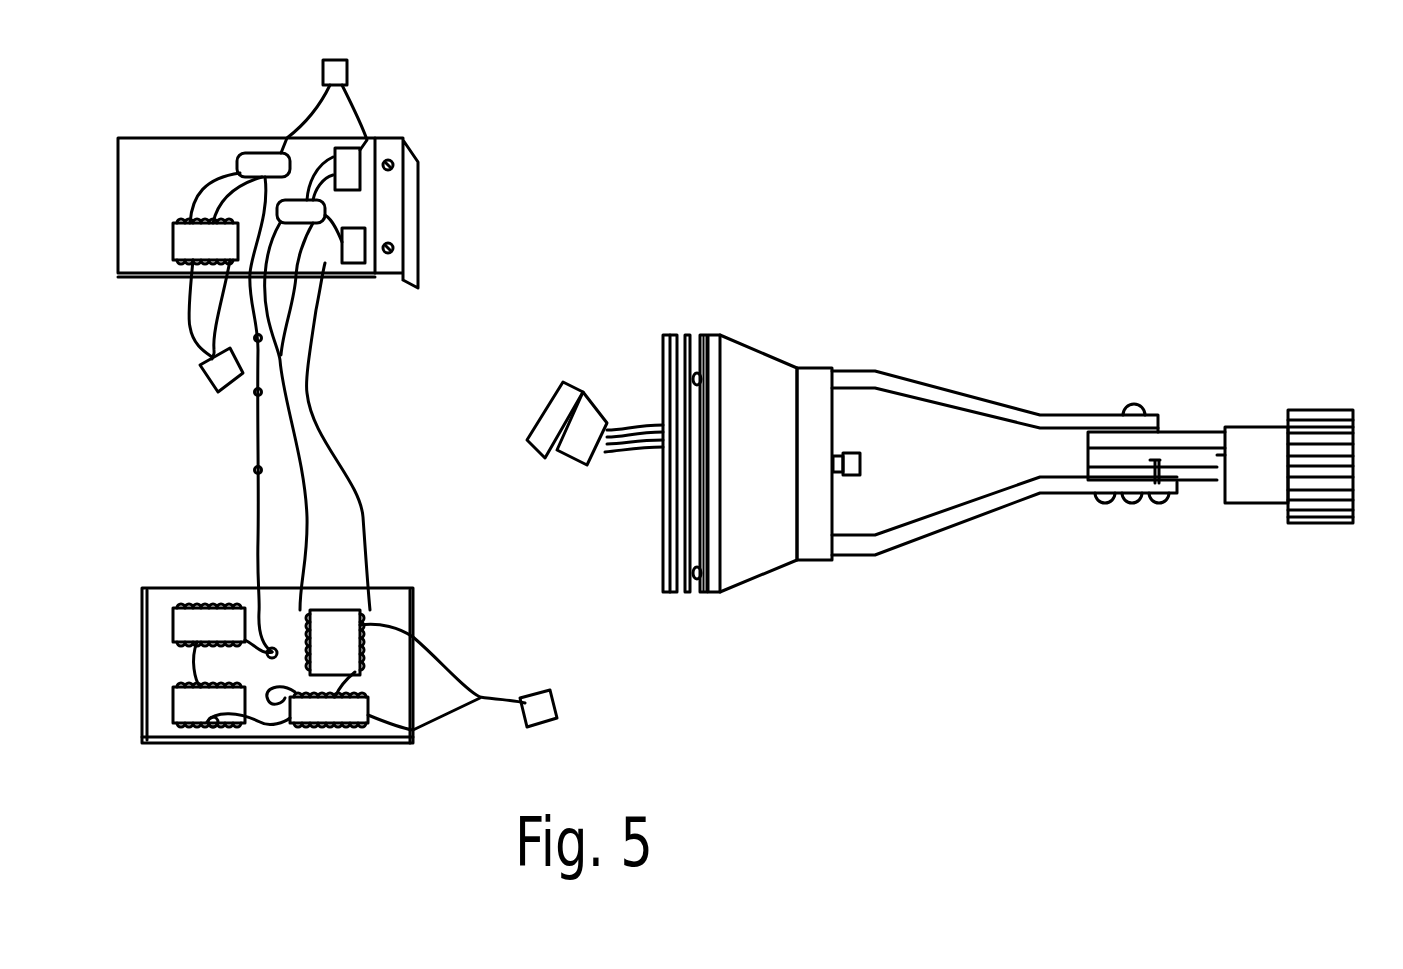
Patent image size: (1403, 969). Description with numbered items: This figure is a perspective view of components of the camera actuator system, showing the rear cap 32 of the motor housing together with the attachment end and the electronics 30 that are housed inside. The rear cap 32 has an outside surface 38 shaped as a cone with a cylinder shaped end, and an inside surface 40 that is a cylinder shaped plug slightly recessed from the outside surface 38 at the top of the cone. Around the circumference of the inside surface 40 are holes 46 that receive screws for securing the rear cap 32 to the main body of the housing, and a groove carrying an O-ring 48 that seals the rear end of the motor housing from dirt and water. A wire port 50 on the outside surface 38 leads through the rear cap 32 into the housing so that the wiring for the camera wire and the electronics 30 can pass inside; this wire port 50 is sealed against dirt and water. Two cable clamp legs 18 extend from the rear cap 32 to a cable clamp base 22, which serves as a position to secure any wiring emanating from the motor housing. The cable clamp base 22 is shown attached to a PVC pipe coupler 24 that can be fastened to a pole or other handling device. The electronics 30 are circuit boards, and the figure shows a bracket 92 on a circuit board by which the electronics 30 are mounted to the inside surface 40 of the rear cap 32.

The electronics 30 is at (175, 138).
The bracket 92 is at (413, 162).
The rear cap 32 is at (778, 310).
The inside surface 40 is at (664, 567).
The O-ring 48 is at (686, 332).
The holes 46 is at (705, 330).
The outside surface 38 is at (781, 555).
The cable clamp legs 18 is at (957, 398).
The cable clamp base 22 is at (1183, 437).
The PVC pipe coupler 24 is at (1243, 435).
The wire port 50 is at (840, 453).